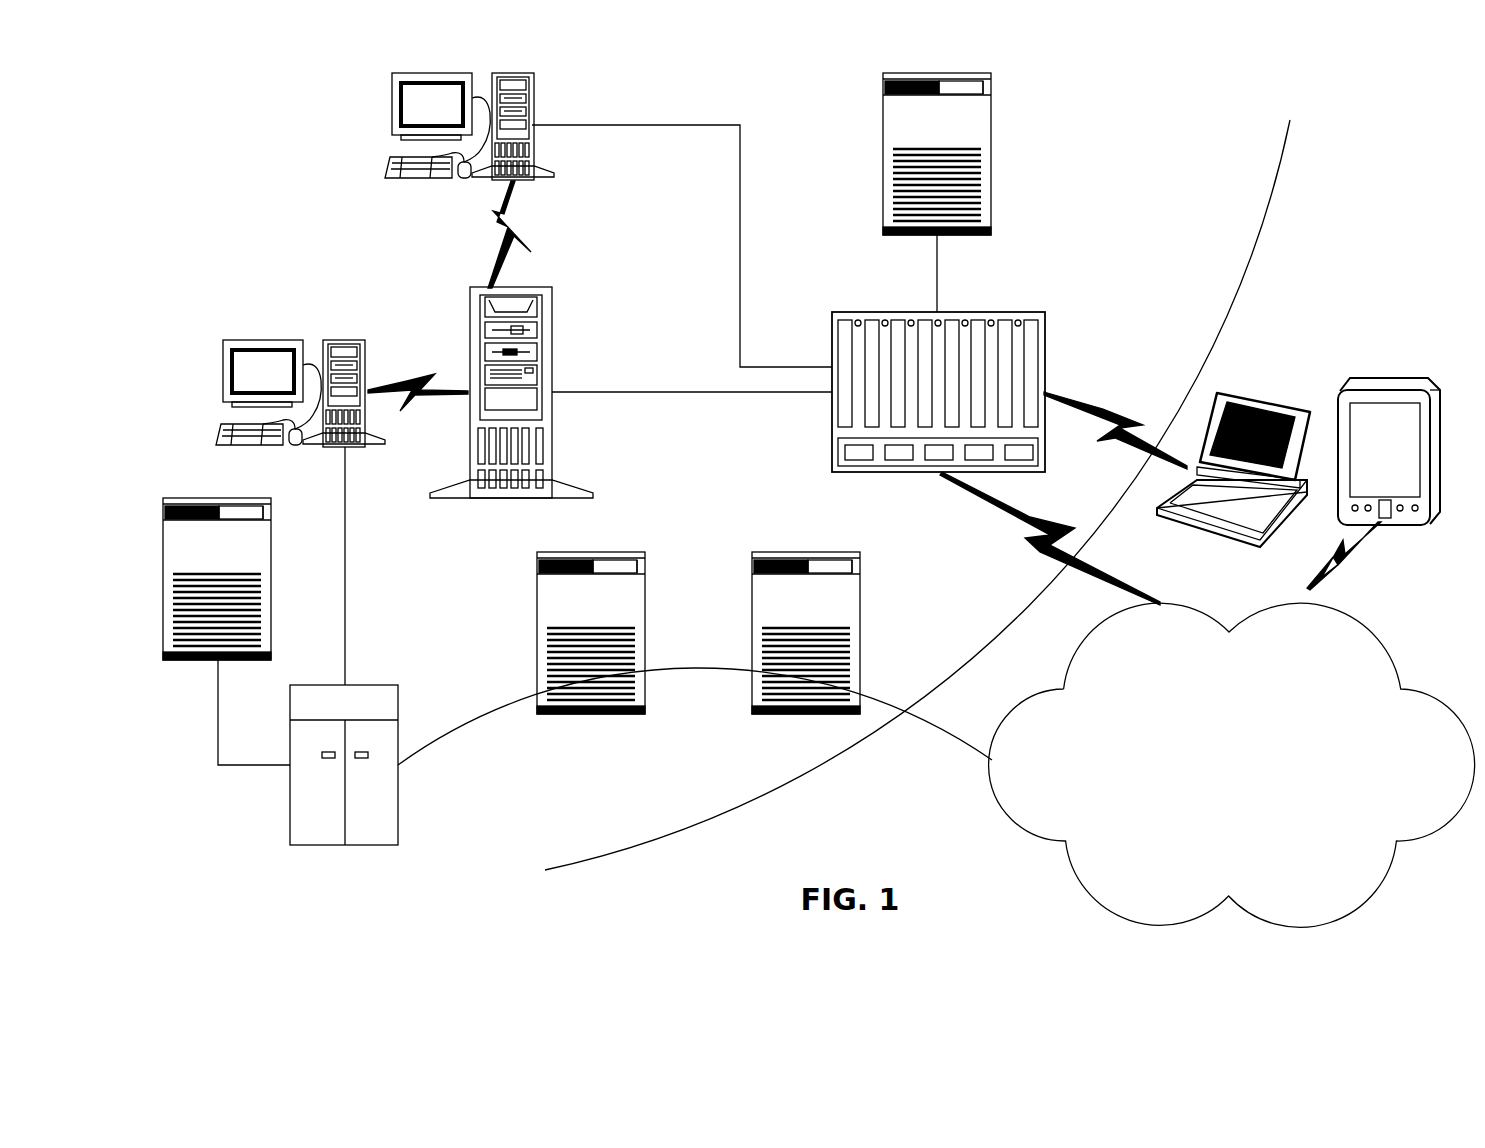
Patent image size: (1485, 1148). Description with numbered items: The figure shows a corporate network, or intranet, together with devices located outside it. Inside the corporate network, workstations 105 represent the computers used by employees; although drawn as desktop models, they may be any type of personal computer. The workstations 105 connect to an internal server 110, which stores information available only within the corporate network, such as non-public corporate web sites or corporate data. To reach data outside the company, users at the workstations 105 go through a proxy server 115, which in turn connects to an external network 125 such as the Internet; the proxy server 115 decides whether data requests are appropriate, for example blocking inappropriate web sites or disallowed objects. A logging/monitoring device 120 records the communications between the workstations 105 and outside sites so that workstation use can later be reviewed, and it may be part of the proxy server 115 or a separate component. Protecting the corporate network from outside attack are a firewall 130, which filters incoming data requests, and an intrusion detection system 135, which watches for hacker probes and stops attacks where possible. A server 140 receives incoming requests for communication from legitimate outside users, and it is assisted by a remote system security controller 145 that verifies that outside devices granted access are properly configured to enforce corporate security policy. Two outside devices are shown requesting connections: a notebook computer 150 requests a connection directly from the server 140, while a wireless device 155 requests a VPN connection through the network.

The workstations 105 is at (422, 207).
The internal server 110 is at (548, 288).
The proxy server 115 is at (290, 820).
The logging/monitoring device 120 is at (182, 498).
The network 125 is at (1010, 817).
The firewall 130 is at (798, 552).
The intrusion detection system 135 is at (603, 552).
The server 140 is at (1003, 312).
The remote system security controller 145 is at (992, 152).
The notebook computer 150 is at (1232, 393).
The wireless device 155 is at (1377, 379).